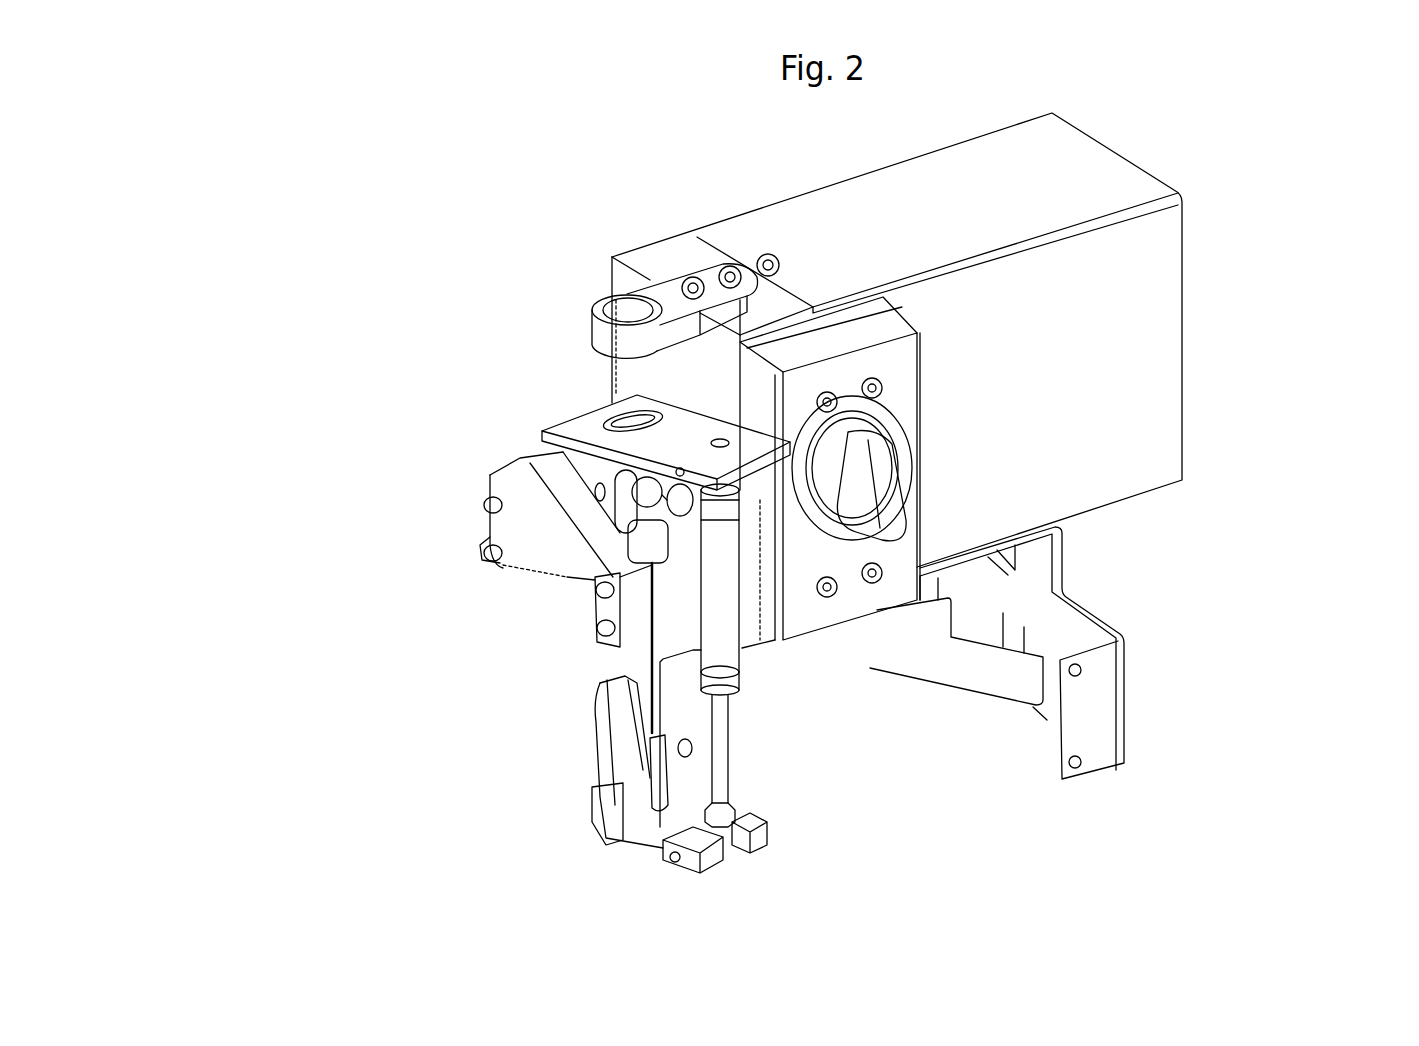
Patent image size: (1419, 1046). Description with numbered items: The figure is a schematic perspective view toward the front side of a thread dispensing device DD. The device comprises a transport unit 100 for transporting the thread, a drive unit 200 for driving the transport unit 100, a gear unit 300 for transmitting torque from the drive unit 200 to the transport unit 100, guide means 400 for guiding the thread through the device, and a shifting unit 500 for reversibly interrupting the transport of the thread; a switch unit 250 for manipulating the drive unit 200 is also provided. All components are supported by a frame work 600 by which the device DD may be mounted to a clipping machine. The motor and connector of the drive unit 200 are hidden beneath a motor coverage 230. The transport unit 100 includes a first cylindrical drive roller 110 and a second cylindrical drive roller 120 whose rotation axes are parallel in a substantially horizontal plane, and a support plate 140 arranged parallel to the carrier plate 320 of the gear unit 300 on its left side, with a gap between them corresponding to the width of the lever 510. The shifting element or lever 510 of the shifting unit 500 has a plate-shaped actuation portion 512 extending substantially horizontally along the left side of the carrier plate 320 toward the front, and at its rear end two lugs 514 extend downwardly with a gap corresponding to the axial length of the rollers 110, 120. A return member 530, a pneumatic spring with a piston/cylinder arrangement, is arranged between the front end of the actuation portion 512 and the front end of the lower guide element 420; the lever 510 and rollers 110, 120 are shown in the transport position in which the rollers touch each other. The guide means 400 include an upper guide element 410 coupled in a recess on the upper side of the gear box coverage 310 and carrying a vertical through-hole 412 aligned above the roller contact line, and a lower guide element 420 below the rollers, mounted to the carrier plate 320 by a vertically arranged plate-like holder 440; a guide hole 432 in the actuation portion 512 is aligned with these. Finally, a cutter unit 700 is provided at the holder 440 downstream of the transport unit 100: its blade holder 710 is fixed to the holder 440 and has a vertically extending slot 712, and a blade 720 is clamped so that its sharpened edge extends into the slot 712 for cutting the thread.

The transport unit 100 is at (248, 687).
The first cylindrical drive roller 110 is at (632, 497).
The second cylindrical drive roller 120 is at (665, 530).
The support plate 140 is at (532, 553).
The drive unit 200 is at (1112, 138).
The motor coverage 230 is at (1067, 195).
The switch unit 250 is at (900, 397).
The gear unit 300 is at (632, 240).
The gear box coverage 310 is at (675, 252).
The carrier plate 320 is at (622, 373).
The guide means 400 is at (330, 332).
The upper guide element 410 is at (597, 330).
The vertical through-hole 412 is at (622, 307).
The lower guide element 420 is at (598, 787).
The guide hole 432 is at (635, 418).
The plate-like holder 440 is at (652, 655).
The shifting unit 500 is at (242, 474).
The shifting element or lever 510 is at (575, 442).
The actuation portion 512 is at (655, 442).
The lugs 514 is at (687, 497).
The return member 530 is at (722, 642).
The frame work 600 is at (1147, 721).
The cutting device or cutter unit 700 is at (653, 900).
The blade holder 710 is at (677, 808).
The slot 712 is at (652, 800).
The blade 720 is at (650, 790).
The thread dispensing device DD is at (1268, 183).